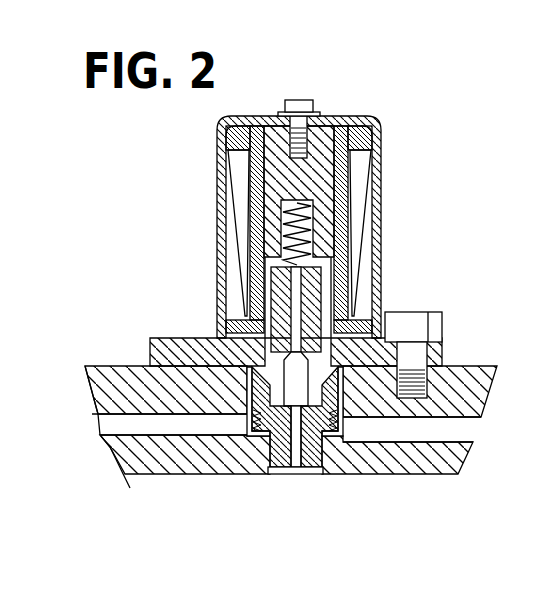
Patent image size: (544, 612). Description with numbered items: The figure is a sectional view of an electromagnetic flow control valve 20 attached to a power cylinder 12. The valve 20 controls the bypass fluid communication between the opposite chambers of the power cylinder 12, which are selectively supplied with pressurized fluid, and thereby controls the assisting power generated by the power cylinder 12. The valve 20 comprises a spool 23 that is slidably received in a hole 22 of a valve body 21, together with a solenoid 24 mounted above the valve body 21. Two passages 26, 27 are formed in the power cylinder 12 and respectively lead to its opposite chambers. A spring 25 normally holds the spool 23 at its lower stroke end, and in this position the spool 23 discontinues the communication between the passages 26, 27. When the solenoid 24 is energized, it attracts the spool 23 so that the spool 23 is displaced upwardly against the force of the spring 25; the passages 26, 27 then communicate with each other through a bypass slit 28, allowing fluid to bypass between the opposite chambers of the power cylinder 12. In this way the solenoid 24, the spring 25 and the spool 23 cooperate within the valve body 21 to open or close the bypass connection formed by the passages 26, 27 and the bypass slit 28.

The power cylinder 12 is at (117, 373).
The electromagnetic flow control valve 20 is at (394, 142).
The valve body 21 is at (170, 340).
The hole 22 is at (252, 300).
The spool 23 is at (312, 300).
The solenoid 24 is at (358, 176).
The spring 25 is at (282, 214).
The passage 26 is at (122, 430).
The passage 27 is at (300, 473).
The bypass slit 28 is at (277, 400).